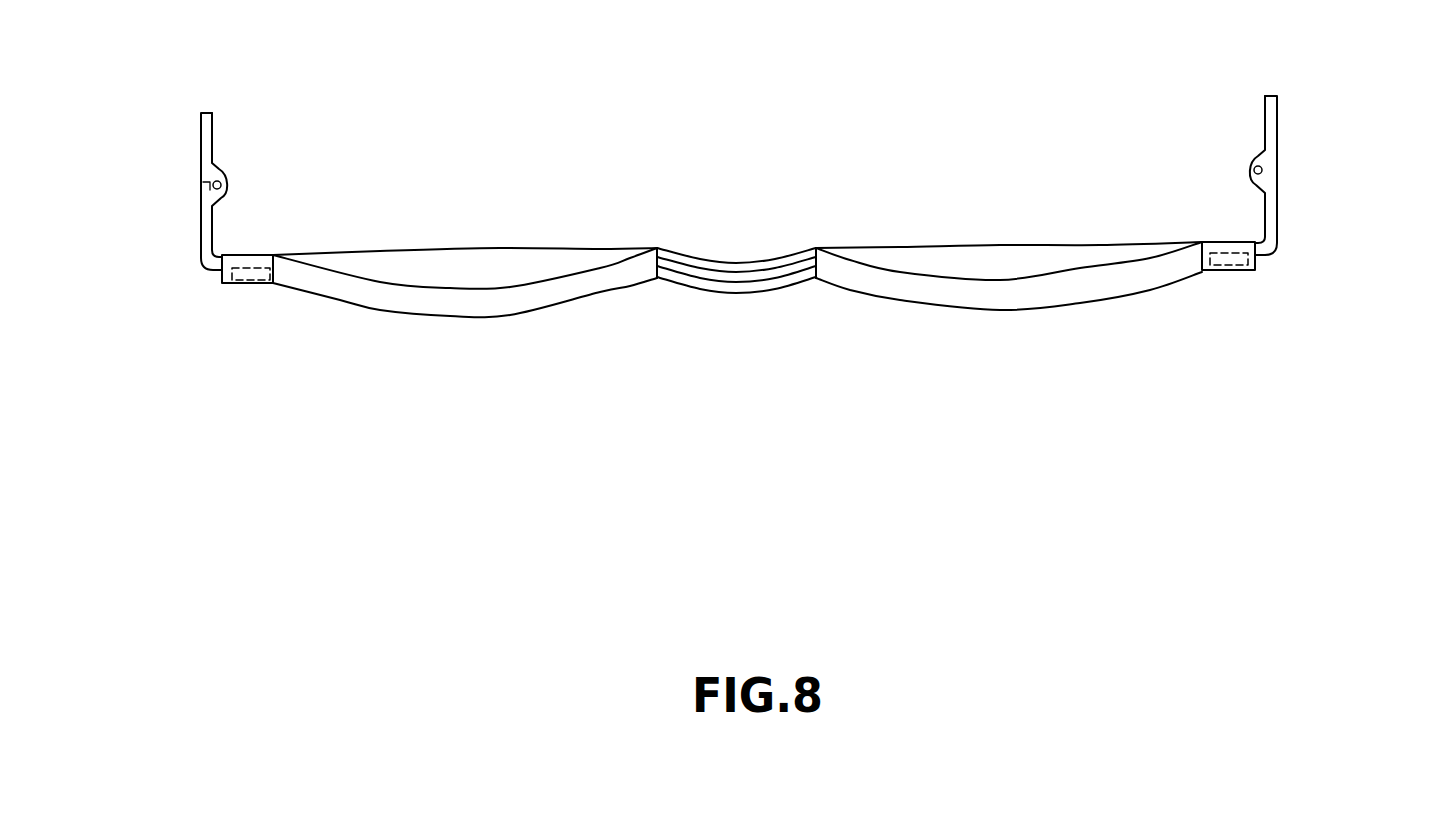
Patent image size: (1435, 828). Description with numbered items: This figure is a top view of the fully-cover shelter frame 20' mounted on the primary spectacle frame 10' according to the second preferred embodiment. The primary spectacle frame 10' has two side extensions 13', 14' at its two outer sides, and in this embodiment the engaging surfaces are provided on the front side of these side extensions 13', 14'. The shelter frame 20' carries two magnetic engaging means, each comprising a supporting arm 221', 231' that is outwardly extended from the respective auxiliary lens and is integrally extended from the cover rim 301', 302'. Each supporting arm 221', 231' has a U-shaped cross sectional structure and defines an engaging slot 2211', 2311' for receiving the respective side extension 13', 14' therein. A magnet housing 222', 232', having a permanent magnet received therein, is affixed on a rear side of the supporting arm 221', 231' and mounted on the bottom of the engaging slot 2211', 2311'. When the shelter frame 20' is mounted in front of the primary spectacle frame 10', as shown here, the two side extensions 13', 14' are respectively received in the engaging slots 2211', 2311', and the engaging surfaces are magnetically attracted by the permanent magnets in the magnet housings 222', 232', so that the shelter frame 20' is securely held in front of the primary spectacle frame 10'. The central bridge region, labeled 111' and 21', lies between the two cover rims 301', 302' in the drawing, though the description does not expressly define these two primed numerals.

The primary spectacle frame 10' is at (735, 285).
The side extension 13' is at (1225, 175).
The side extension 14' is at (260, 190).
The fully-cover shelter frame 20' is at (465, 377).
The bridge 21' is at (736, 353).
The bridge groove 111' is at (731, 344).
The supporting arm 221' is at (1249, 320).
The magnet housing 222' is at (1298, 287).
The engaging slot 2211' is at (1334, 207).
The supporting arm 231' is at (224, 375).
The magnet housing 232' is at (190, 325).
The engaging slot 2311' is at (140, 235).
The cover rim 301' is at (1009, 347).
The cover rim 302' is at (465, 390).